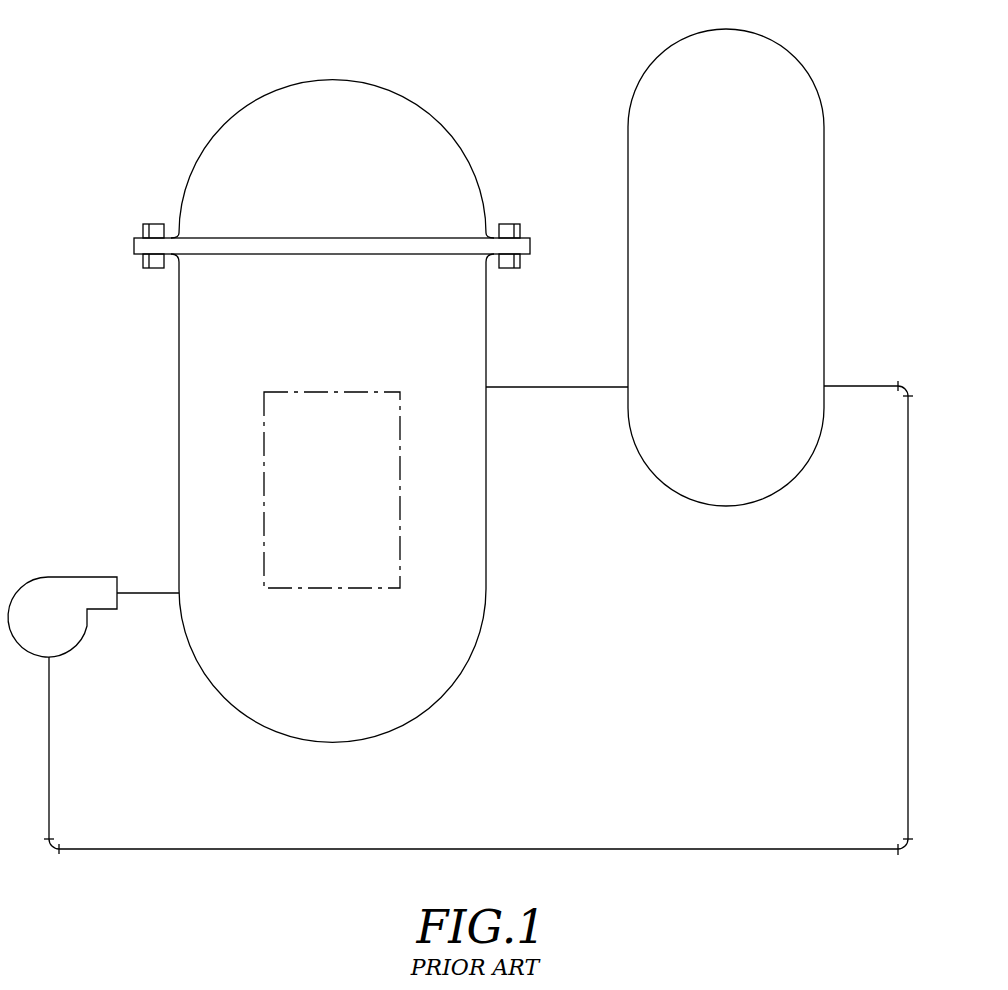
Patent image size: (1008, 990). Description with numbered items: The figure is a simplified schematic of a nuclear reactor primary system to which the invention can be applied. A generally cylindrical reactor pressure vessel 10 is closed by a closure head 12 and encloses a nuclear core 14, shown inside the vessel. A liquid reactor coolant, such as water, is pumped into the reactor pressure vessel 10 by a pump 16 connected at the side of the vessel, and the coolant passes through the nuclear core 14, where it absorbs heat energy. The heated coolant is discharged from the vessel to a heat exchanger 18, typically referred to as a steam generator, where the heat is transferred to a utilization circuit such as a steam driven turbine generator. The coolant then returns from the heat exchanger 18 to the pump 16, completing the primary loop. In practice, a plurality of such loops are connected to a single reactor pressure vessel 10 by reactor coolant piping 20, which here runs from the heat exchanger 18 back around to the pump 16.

The reactor pressure vessel 10 is at (315, 492).
The closure head 12 is at (260, 104).
The nuclear core 14 is at (320, 392).
The pump 16 is at (75, 577).
The heat exchanger 18 is at (824, 175).
The reactor coolant piping 20 is at (908, 735).